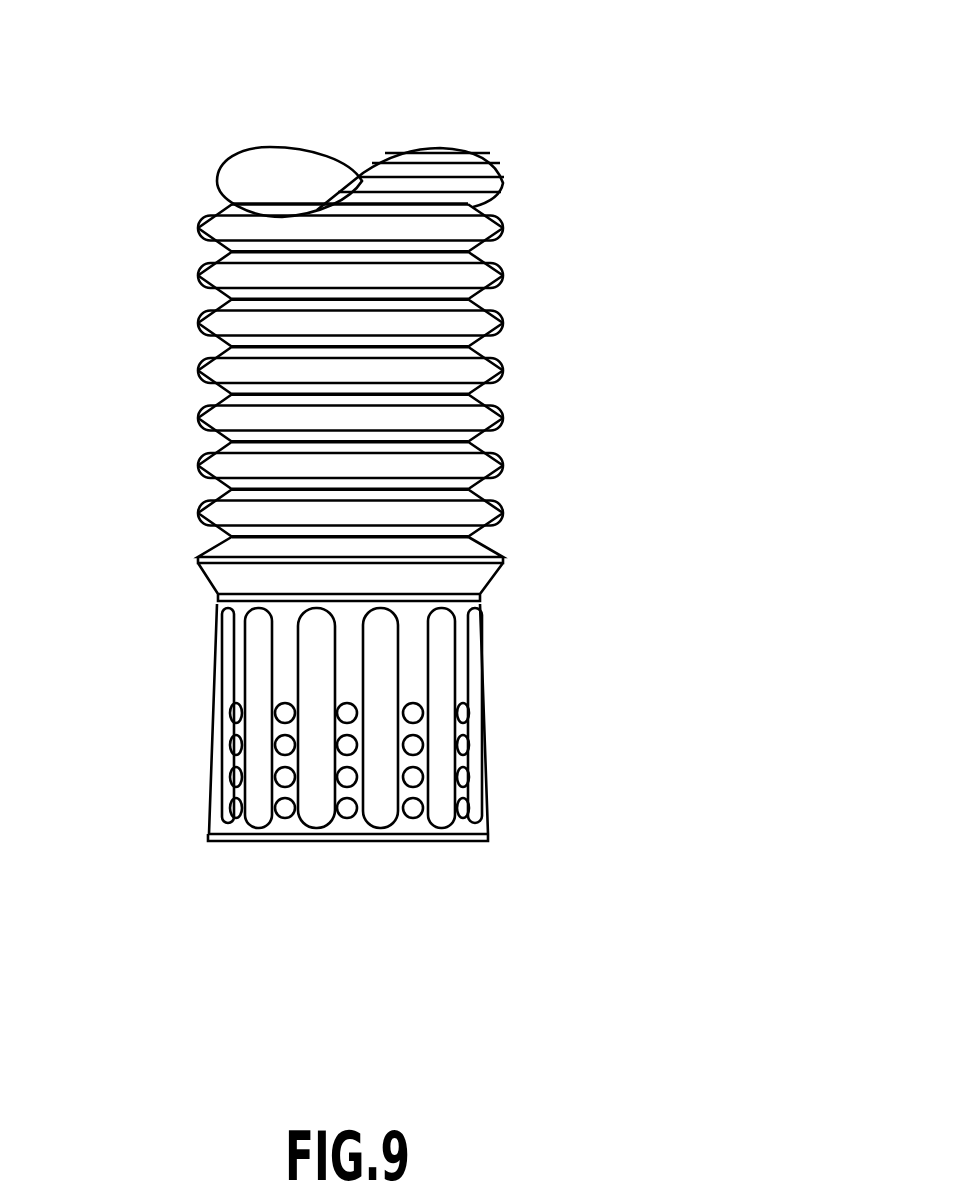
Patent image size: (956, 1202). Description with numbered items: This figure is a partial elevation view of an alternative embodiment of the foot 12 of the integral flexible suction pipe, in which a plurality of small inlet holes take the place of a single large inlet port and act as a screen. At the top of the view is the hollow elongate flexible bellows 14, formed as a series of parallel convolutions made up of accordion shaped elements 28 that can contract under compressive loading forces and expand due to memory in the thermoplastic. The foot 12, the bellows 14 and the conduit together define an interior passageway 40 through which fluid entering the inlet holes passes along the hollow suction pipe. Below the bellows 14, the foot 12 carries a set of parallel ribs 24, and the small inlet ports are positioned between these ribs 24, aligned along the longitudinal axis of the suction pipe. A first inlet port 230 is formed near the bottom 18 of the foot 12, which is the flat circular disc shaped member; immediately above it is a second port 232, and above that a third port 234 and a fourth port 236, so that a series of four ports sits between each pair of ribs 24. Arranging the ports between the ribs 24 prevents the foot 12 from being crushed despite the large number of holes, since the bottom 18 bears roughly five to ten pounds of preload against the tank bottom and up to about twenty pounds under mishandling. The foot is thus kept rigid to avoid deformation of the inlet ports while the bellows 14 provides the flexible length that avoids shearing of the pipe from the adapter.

The hollow foot 12 is at (350, 778).
The hollow elongate flexible bellows 14 is at (433, 374).
The flat circular disc shaped member 18 is at (392, 838).
The parallel ribs 24 is at (317, 645).
The accordion shaped elements 28 is at (505, 280).
The interior passageway 40 is at (292, 178).
The first inlet port 230 is at (345, 811).
The second port 232 is at (345, 780).
The third port 234 is at (345, 748).
The fourth port 236 is at (345, 716).